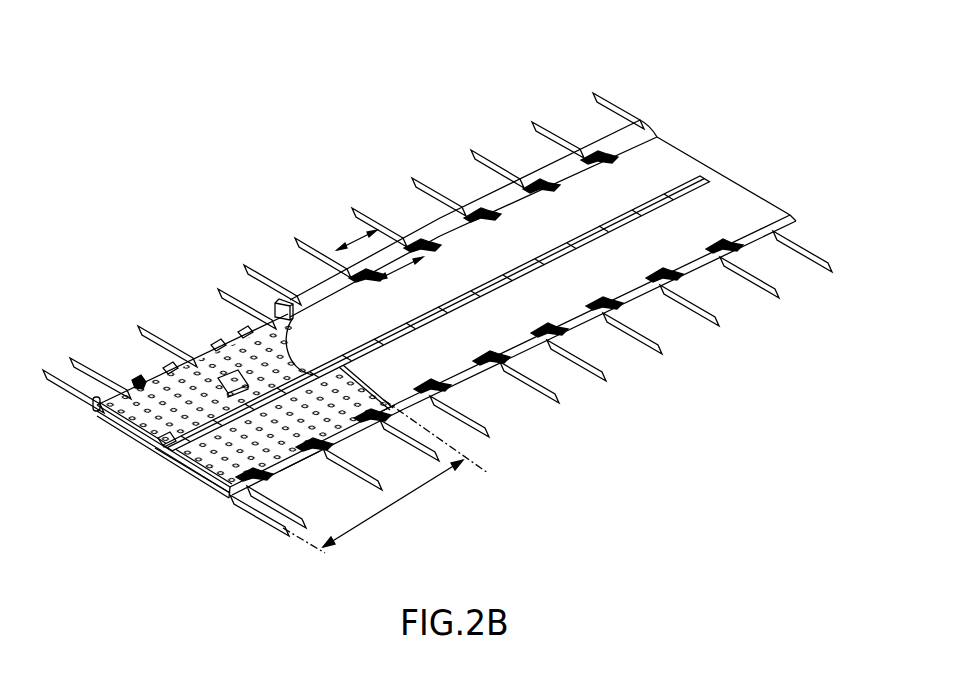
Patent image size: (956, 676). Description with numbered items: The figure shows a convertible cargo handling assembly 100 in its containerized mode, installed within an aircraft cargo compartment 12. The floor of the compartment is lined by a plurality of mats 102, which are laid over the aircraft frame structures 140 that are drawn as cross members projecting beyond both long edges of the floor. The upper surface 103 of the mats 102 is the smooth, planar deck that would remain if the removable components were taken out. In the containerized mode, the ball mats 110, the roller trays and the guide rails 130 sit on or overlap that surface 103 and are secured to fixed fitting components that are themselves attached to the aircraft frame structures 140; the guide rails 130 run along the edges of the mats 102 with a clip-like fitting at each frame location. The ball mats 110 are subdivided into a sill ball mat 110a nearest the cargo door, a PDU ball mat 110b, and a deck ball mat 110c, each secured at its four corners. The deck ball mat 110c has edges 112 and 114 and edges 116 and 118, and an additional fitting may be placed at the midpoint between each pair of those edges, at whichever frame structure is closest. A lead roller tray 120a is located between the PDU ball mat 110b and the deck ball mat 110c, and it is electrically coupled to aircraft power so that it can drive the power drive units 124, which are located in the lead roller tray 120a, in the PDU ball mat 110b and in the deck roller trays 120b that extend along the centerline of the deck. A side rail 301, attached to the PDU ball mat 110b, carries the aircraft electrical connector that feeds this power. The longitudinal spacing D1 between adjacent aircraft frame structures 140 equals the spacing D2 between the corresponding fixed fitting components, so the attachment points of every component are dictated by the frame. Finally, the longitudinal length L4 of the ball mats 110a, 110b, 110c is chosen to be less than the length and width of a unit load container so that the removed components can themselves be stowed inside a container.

The cargo compartment 12 is at (140, 137).
The convertible cargo handling assembly 100 is at (343, 150).
The mats 102 is at (423, 229).
The surface of mats 103 is at (678, 246).
The ball mats 110 is at (76, 437).
The sill ball mat 110a is at (158, 420).
The PDU ball mat 110b is at (160, 442).
The deck ball mat 110c is at (166, 462).
The edge of deck ball mat 112 is at (187, 483).
The edge of deck ball mat 114 is at (384, 392).
The edge of deck ball mat 116 is at (292, 464).
The edge of deck ball mat 118 is at (316, 322).
The lead roller tray 120a is at (136, 379).
The deck roller trays 120b is at (635, 207).
The power drive units 124 is at (383, 337).
The guide rails 130 is at (474, 210).
The aircraft frame structures 140 is at (541, 122).
The side rail 301 is at (92, 406).
The longitudinal distance between adjacent aircraft frame structures D1 is at (355, 233).
The longitudinal distance between fixed components D2 is at (399, 271).
The longitudinal length of ball mats L4 is at (385, 476).